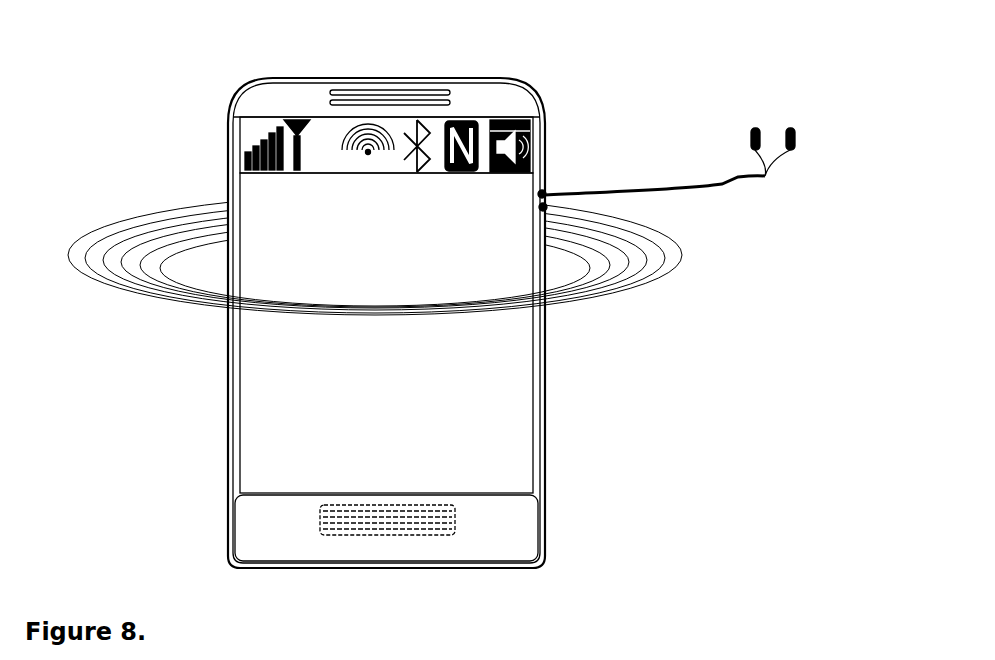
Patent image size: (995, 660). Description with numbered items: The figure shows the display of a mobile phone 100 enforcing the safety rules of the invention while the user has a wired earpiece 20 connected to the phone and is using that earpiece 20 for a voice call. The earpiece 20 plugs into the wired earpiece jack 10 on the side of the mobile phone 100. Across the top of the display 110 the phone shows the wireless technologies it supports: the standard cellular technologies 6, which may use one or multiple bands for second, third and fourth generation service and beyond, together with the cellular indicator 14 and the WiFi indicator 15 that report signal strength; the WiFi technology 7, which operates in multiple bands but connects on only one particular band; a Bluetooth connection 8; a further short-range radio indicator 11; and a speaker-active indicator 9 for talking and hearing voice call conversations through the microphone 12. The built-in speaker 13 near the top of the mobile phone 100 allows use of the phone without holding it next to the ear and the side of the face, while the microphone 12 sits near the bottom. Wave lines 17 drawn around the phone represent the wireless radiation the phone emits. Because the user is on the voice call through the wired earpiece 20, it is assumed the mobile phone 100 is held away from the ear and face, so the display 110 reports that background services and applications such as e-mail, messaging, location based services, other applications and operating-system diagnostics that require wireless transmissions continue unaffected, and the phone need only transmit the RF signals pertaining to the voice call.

The mobile phone 100 is at (464, 78).
The speaker 13 is at (450, 103).
The WiFi indicator 15 is at (260, 141).
The cellular technologies 6 is at (283, 172).
The cellular indicator 14 is at (366, 138).
The WiFi technology 7 is at (355, 173).
The Bluetooth connection 8 is at (412, 163).
The NFC transceiver 11 is at (460, 168).
The speaker-active indicator 9 is at (525, 147).
The acoustic waves 17 is at (290, 300).
The display 110 is at (507, 387).
The microphone 12 is at (455, 517).
The wired earpiece jack 10 is at (547, 208).
The wired earpiece 20 is at (765, 184).